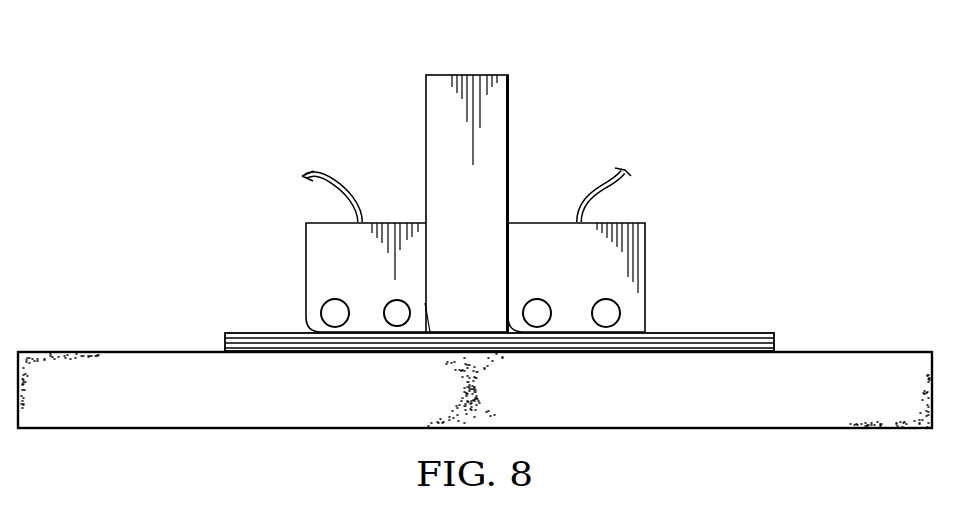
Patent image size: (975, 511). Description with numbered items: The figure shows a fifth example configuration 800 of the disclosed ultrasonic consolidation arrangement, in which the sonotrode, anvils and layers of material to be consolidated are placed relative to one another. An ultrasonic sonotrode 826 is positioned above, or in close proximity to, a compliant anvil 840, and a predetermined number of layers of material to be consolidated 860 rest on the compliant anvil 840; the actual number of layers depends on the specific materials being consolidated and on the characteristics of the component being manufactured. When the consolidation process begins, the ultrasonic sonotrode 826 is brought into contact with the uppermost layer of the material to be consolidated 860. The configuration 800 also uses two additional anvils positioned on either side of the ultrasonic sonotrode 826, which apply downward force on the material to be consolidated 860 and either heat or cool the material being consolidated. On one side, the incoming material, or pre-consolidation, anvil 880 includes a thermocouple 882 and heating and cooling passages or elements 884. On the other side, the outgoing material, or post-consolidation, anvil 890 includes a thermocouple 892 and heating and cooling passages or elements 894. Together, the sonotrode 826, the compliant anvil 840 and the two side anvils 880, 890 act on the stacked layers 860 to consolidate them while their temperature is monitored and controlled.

The configuration 800 is at (220, 86).
The ultrasonic sonotrode 826 is at (510, 97).
The compliant anvil 840 is at (197, 438).
The layers of material to be consolidated 860 is at (722, 324).
The incoming material anvil 880 is at (296, 242).
The thermocouple 882 is at (335, 188).
The heating and cooling passages or elements 884 is at (336, 316).
The outgoing material anvil 890 is at (537, 212).
The thermocouple 892 is at (605, 187).
The heating and cooling passages or elements 894 is at (537, 316).